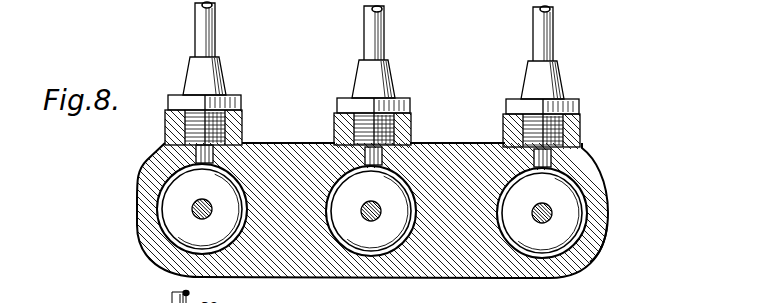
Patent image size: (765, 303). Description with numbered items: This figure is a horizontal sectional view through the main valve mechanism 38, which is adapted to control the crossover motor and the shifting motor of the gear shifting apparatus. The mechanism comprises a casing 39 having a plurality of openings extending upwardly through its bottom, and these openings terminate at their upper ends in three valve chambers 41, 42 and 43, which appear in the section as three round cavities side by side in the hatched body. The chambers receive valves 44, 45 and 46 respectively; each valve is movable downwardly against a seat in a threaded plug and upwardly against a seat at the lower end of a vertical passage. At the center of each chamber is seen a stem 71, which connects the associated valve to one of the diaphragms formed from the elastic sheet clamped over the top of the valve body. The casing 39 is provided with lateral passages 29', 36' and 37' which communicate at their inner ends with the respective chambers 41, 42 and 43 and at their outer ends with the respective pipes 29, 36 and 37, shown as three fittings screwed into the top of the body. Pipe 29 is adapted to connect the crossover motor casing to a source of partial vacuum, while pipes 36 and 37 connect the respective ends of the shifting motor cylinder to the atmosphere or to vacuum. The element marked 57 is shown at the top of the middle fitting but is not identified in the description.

The pipe 29 is at (360, 152).
The pipe 36 is at (397, 154).
The pipe 37 is at (481, 154).
The tube cap 57 is at (383, 12).
The lateral passage 29' is at (165, 146).
The lateral passage 36' is at (341, 144).
The lateral passage 37' is at (510, 144).
The main valve mechanism 38 is at (608, 187).
The casing 39 is at (607, 233).
The valve chamber 41 is at (160, 207).
The valve 44 is at (202, 209).
The valve 45 is at (371, 211).
The valve chamber 42 is at (396, 248).
The valve 46 is at (542, 213).
The valve chamber 43 is at (578, 240).
The stem 71 is at (214, 194).